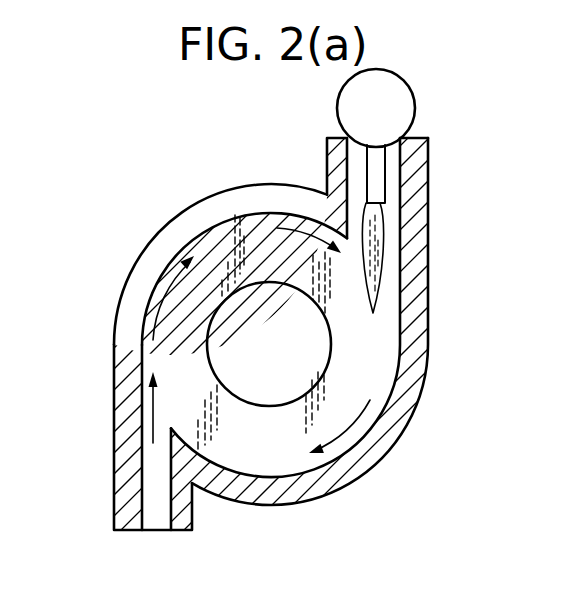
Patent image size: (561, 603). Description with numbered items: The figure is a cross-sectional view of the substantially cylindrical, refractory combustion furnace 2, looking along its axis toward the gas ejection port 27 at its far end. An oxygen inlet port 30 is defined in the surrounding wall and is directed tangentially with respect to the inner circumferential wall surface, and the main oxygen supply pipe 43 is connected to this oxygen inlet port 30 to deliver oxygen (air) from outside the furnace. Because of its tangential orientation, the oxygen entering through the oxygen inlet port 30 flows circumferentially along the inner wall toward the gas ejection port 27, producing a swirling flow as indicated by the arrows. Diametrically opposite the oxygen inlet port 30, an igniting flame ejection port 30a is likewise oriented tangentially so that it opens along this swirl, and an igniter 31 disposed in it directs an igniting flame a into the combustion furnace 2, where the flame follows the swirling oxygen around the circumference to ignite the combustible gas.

The combustion furnace 2 is at (358, 476).
The gas ejection port 27 is at (330, 337).
The oxygen inlet port 30 is at (115, 473).
The igniting flame ejection port 30a is at (327, 152).
The igniter 31 is at (416, 105).
The igniting flame a is at (378, 250).
The main oxygen supply pipe 43 is at (157, 482).